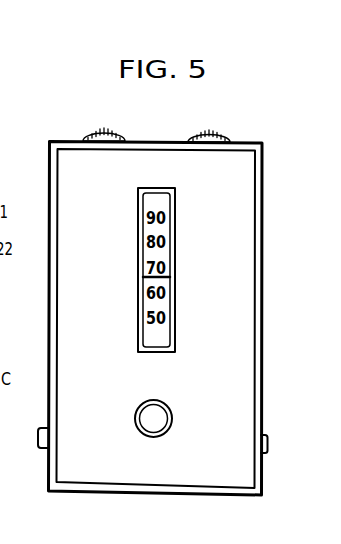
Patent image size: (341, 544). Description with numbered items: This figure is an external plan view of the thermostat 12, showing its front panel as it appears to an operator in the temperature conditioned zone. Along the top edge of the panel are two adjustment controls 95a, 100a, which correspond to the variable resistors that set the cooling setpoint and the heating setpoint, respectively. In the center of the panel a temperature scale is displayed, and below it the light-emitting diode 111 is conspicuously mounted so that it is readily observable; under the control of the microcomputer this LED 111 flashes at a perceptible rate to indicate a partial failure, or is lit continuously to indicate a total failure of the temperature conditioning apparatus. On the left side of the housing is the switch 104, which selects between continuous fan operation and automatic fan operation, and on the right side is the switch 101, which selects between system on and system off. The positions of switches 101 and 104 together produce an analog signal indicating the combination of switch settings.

The thermostat 12 is at (62, 309).
The first adjustment knob 95a is at (122, 134).
The second adjustment knob 100a is at (218, 135).
The light-emitting diode (LED) 111 is at (160, 414).
The switch 104 is at (38, 437).
The switch 101 is at (260, 445).